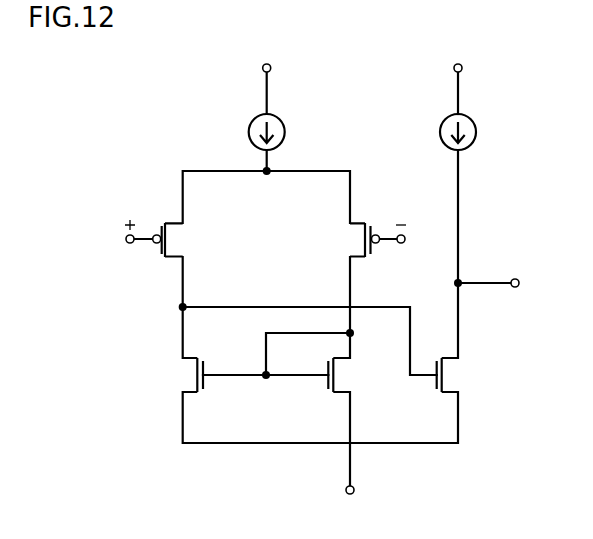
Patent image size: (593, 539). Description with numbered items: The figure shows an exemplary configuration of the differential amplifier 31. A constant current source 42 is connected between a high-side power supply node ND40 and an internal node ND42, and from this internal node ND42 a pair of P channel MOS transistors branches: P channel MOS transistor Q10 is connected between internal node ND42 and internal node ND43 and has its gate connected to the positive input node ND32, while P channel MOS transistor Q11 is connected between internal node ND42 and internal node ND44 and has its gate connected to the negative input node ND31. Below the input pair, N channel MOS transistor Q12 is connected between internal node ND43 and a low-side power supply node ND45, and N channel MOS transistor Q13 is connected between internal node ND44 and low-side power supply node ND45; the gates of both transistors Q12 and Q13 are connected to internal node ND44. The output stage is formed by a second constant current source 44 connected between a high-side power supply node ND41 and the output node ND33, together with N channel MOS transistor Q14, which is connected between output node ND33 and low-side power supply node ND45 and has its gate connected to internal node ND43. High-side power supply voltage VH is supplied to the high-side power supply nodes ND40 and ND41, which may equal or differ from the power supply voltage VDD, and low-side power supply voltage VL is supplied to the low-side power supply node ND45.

The differential amplifier 31 is at (321, 289).
The constant current source 42 is at (285, 132).
The constant current source 44 is at (476, 132).
The P channel MOS transistor Q10 is at (162, 227).
The P channel MOS transistor Q11 is at (372, 227).
The N channel MOS transistor Q12 is at (208, 384).
The N channel MOS transistor Q13 is at (323, 384).
The N channel MOS transistor Q14 is at (437, 389).
The negative input node ND31 is at (401, 243).
The positive input node ND32 is at (130, 243).
The output node ND33 is at (515, 279).
The high-side power supply node ND40 is at (271, 68).
The high-side power supply node ND41 is at (462, 68).
The internal node ND42 is at (266, 175).
The internal node ND43 is at (186, 305).
The internal node ND44 is at (346, 331).
The low-side power supply node ND45 is at (349, 494).